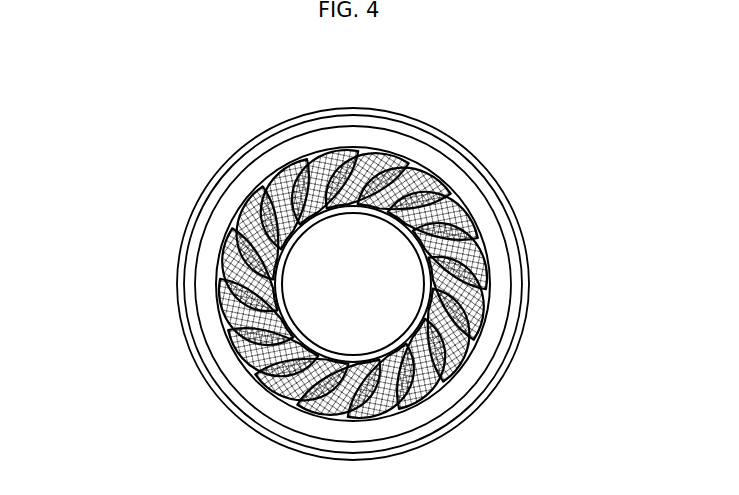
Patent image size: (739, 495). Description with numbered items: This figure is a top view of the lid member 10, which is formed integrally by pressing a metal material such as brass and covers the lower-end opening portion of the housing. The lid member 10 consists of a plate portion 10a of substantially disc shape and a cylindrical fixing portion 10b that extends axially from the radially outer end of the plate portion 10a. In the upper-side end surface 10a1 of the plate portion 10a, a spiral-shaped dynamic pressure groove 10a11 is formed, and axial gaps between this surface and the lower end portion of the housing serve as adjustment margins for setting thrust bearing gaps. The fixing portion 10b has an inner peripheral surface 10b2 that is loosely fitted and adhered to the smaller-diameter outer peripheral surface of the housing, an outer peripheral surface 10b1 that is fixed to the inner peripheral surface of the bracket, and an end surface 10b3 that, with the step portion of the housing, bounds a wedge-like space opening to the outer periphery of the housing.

The lid member 10 is at (531, 243).
The plate portion 10a is at (462, 181).
The upper-side end surface 10a1 is at (341, 159).
The dynamic pressure groove 10a11 is at (358, 168).
The fixing portion 10b is at (270, 168).
The outer peripheral surface 10b1 is at (183, 235).
The inner peripheral surface 10b2 is at (192, 279).
The end surface 10b3 is at (209, 206).